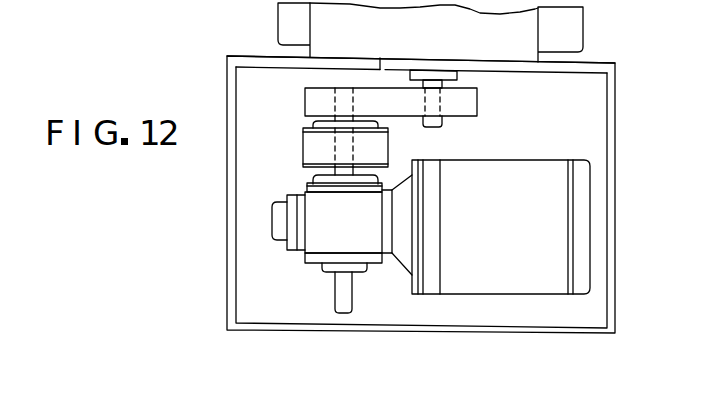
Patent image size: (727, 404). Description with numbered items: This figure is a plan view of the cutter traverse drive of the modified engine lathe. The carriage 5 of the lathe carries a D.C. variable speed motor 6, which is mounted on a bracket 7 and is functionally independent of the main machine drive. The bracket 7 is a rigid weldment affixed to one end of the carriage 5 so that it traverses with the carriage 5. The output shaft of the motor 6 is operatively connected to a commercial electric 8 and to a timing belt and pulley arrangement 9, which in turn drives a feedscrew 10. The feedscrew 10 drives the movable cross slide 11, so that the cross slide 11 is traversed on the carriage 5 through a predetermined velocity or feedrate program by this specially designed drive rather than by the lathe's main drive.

The carriage 5 is at (578, 38).
The D.C. variable speed motor 6 is at (558, 221).
The bracket 7 is at (613, 270).
The commercial electric 8 is at (303, 154).
The timing belt and pulley arrangement 9 is at (305, 93).
The feedscrew 10 is at (440, 125).
The cross slide 11 is at (475, 57).